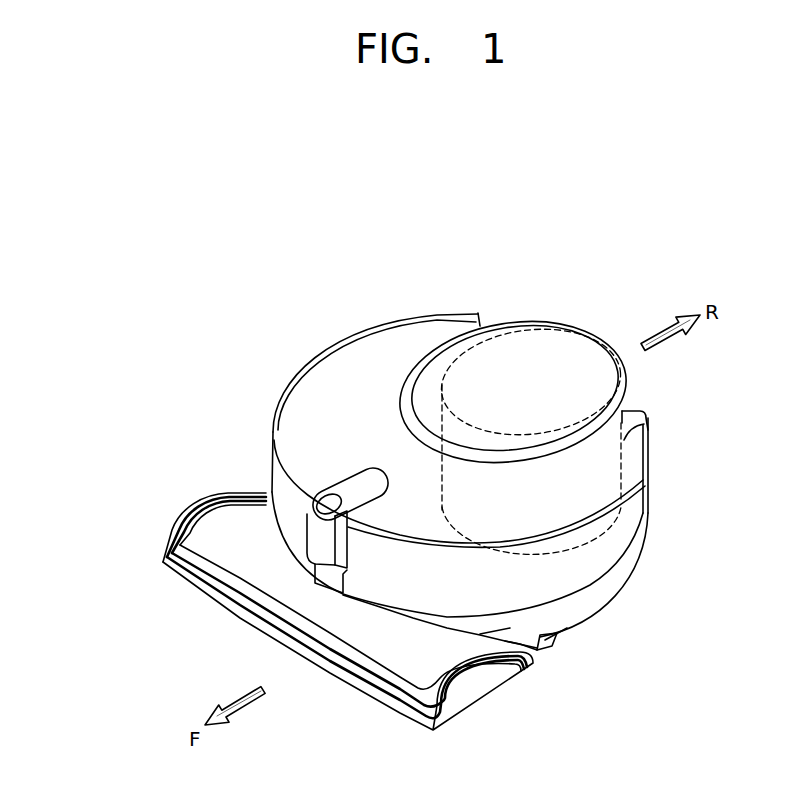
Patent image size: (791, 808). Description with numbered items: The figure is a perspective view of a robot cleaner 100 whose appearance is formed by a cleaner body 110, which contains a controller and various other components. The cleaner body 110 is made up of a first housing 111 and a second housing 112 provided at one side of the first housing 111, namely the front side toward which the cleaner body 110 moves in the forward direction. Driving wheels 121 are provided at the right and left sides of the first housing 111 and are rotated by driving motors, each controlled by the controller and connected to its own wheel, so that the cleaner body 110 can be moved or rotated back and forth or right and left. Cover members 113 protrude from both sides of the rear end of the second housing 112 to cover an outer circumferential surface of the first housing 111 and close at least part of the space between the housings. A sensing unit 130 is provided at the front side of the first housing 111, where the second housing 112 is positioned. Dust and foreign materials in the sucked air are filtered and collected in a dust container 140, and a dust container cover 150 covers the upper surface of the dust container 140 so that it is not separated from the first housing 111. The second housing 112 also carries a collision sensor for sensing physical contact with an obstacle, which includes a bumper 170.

The robot cleaner 100 is at (303, 331).
The cleaner body 110 is at (98, 402).
The first housing 111 is at (290, 417).
The second housing 112 is at (200, 537).
The cover member 113 is at (521, 644).
The driving wheels 121 is at (557, 639).
The sensing unit 130 is at (313, 535).
The dust container 140 is at (623, 437).
The dust container cover 150 is at (552, 356).
The bumper 170 is at (368, 690).